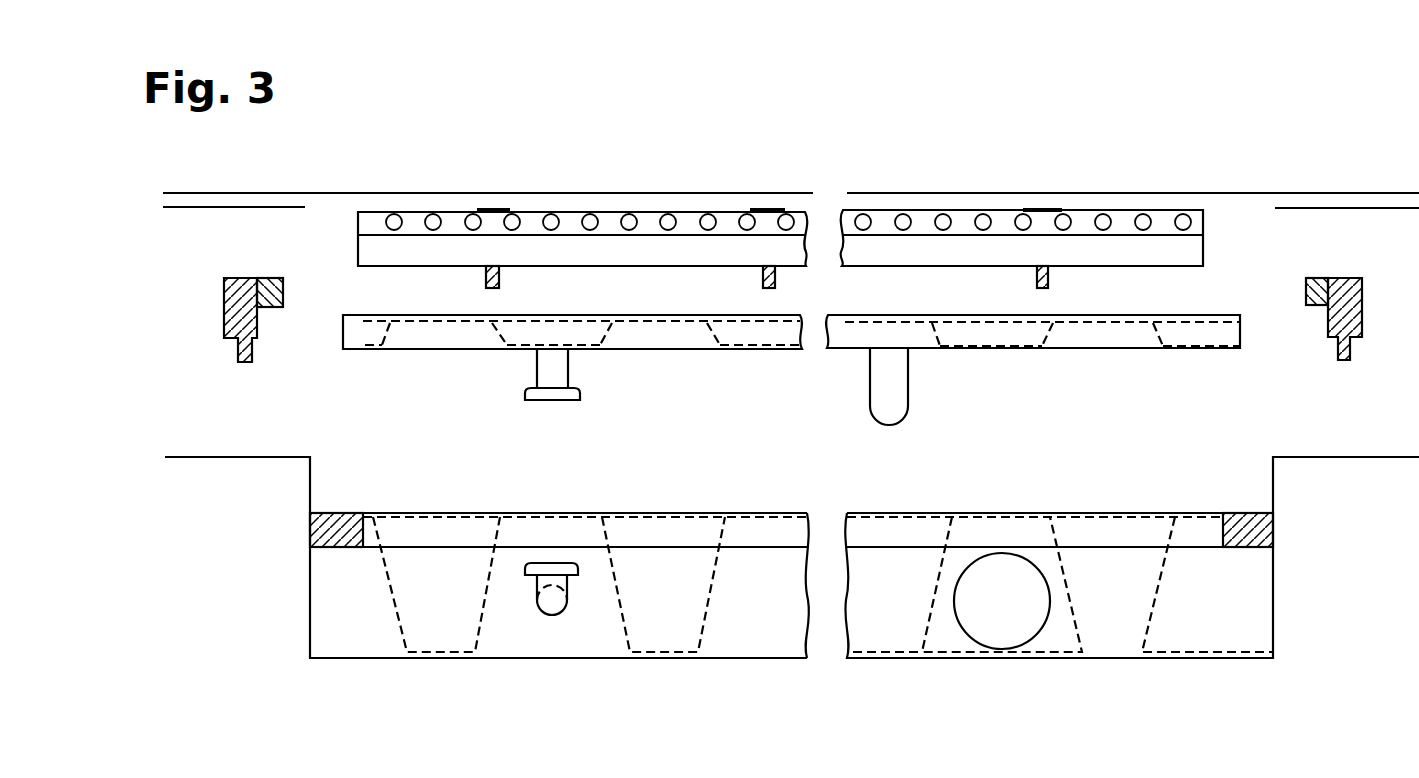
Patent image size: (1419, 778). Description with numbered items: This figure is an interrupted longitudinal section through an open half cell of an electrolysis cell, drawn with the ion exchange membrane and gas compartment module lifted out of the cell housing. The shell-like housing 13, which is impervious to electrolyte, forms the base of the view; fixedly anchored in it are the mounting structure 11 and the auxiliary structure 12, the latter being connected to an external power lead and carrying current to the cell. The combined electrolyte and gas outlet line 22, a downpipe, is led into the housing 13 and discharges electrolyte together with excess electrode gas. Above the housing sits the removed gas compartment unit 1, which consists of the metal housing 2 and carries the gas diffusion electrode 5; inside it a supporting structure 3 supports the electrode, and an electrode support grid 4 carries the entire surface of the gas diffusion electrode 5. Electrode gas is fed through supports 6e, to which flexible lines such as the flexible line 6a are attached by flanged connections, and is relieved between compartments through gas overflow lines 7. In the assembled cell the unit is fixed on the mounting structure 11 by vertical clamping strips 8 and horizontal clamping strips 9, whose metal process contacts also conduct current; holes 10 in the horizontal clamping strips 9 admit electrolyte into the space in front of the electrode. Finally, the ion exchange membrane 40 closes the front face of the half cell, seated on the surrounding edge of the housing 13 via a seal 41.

The gas compartment unit 1 is at (572, 366).
The metal housing 2 is at (465, 351).
The supporting structure 3 is at (712, 336).
The electrode support grid 4 is at (997, 323).
The gas diffusion electrode 5 is at (1033, 343).
The flexible line 6a is at (557, 618).
The support 6e is at (570, 399).
The gas overflow line 7 is at (882, 405).
The vertical clamping strip 8 is at (1362, 325).
The horizontal clamping strip 9 is at (1120, 211).
The holes 10 is at (982, 213).
The mounting structure 11 is at (1233, 513).
The auxiliary structure 12 is at (497, 537).
The housing 13 is at (1077, 658).
The combined electrolyte and gas outlet line 22 is at (1006, 634).
The ion exchange membrane 40 is at (438, 193).
The seal 41 is at (1380, 208).